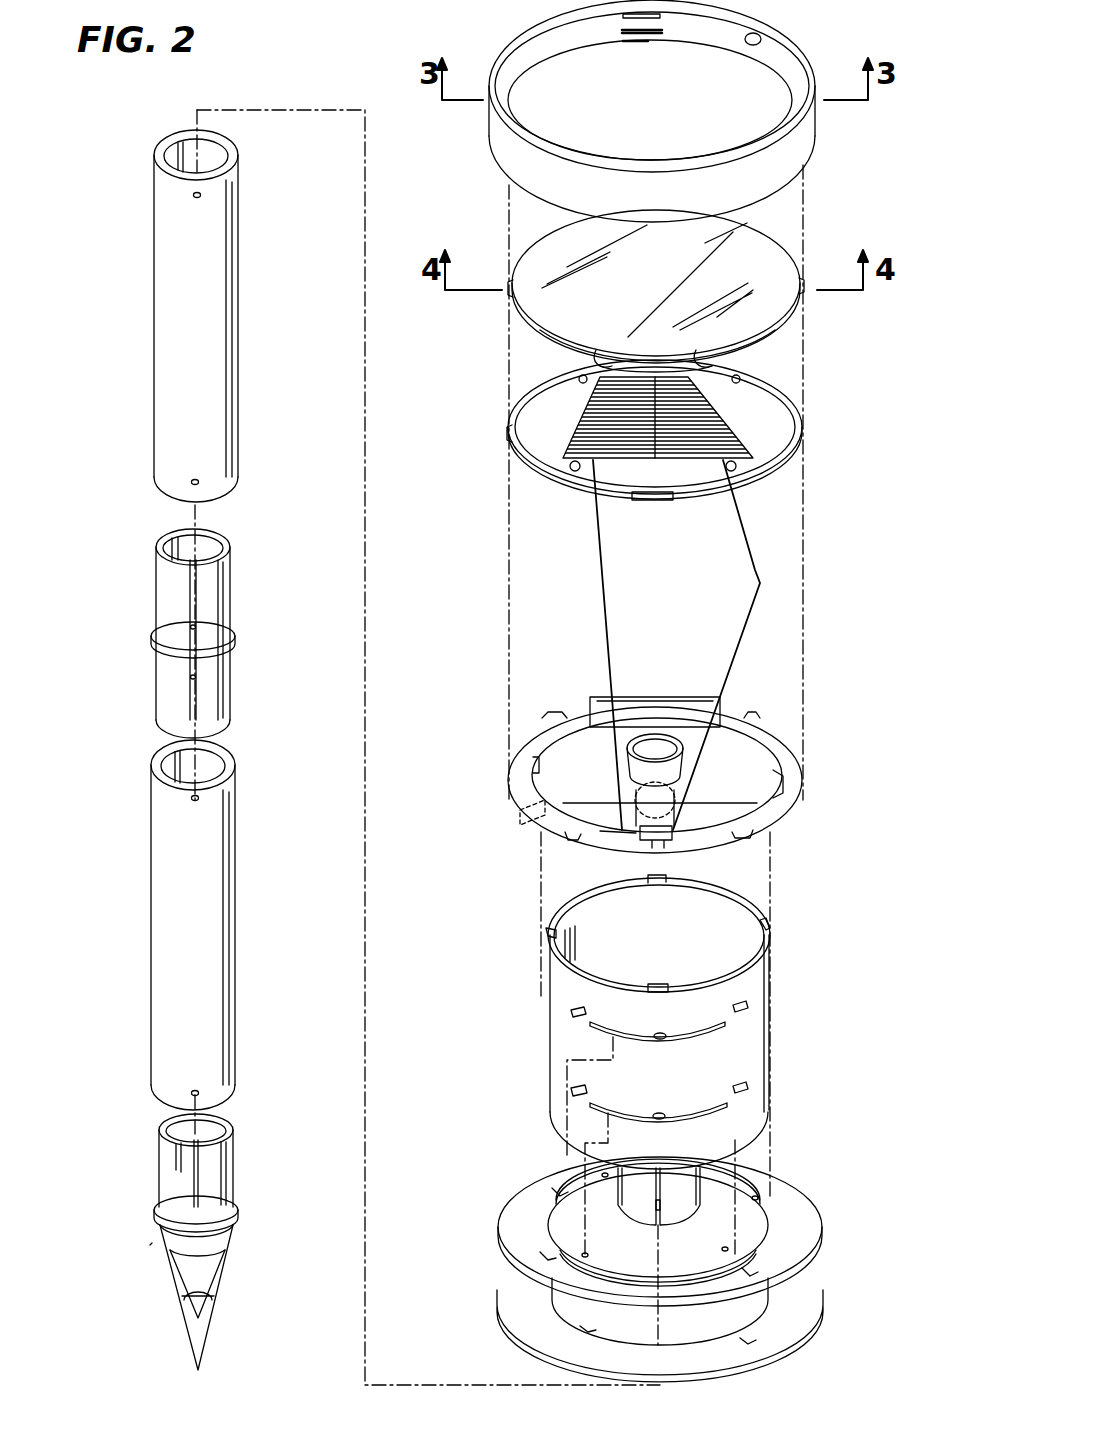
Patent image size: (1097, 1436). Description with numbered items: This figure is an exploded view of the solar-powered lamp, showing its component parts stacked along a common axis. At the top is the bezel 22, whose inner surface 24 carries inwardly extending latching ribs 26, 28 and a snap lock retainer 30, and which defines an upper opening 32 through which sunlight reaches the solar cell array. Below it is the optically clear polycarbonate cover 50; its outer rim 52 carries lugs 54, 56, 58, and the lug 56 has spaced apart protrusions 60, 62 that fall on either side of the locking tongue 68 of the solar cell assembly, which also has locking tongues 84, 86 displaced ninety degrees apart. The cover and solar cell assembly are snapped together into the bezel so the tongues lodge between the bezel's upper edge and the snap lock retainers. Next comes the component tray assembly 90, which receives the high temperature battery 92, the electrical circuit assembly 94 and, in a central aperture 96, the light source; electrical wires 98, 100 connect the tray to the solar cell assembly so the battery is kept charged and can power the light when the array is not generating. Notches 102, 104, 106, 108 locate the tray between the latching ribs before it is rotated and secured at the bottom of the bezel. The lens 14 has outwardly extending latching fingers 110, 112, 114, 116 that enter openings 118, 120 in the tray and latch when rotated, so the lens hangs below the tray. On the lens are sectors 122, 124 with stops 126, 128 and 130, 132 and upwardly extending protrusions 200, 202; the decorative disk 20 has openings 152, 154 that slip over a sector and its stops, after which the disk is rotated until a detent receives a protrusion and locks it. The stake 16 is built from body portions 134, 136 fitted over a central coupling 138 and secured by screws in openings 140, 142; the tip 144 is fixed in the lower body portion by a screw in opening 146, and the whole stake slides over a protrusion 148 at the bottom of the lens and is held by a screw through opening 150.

The lens 14 is at (780, 954).
The stake 16 is at (100, 217).
The decorative disk 20 is at (816, 1275).
The bezel 22 is at (503, 148).
The inner surface 24 is at (722, 42).
The latching rib 26 is at (620, 30).
The latching rib 28 is at (652, 42).
The snap lock retainer 30 is at (628, 18).
The upper opening 32 is at (760, 36).
The cover 50 is at (772, 220).
The outer rim 52 is at (768, 334).
The lug 54 is at (802, 287).
The lug 56 is at (703, 377).
The lug 58 is at (510, 297).
The protrusion 60 is at (601, 357).
The protrusion 62 is at (700, 357).
The locking tongue 68 is at (657, 498).
The locking tongue 84 is at (803, 428).
The locking tongue 86 is at (512, 442).
The component tray assembly 90 is at (788, 741).
The high temperature battery 92 is at (665, 700).
The electrical circuit assembly 94 is at (672, 853).
The central aperture 96 is at (674, 800).
The electrical wire 98 is at (604, 572).
The electrical wire 100 is at (757, 572).
The notch 102 is at (751, 720).
The notch 104 is at (755, 837).
The notch 106 is at (567, 837).
The notch 108 is at (555, 720).
The latching finger 110 is at (767, 923).
The latching finger 112 is at (653, 878).
The latching finger 114 is at (547, 932).
The latching finger 116 is at (658, 985).
The opening 118 is at (783, 786).
The opening 120 is at (533, 758).
The sector 122 is at (697, 1118).
The sector 124 is at (673, 1038).
The stop 126 is at (739, 1088).
The stop 128 is at (577, 1083).
The stop 130 is at (744, 1002).
The stop 132 is at (583, 1007).
The body portion 134 is at (156, 349).
The body portion 136 is at (156, 916).
The central coupling 138 is at (230, 606).
The opening 140 is at (199, 482).
The opening 142 is at (200, 799).
The tip 144 is at (148, 1240).
The opening 146 is at (200, 1093).
The protrusion 148 is at (678, 1203).
The opening 150 is at (202, 196).
The opening 152 is at (758, 1200).
The opening 154 is at (558, 1192).
The protrusion 200 is at (663, 1094).
The protrusion 202 is at (662, 1012).